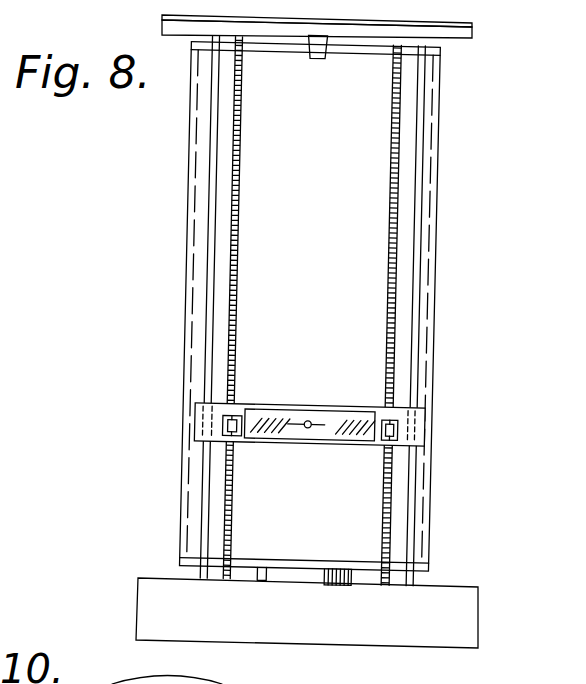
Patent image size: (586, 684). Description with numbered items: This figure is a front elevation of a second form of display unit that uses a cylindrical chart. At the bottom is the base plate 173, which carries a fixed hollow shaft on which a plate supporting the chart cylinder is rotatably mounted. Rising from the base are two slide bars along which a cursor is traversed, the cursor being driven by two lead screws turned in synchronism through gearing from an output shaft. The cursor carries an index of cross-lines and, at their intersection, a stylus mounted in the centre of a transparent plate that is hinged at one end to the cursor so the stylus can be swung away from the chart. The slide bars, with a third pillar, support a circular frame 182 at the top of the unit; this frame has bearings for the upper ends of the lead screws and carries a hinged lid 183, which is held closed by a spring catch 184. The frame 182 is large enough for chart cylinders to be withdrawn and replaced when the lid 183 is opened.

The base plate 173 is at (150, 603).
The circular frame 182 is at (462, 38).
The hinged lid 183 is at (470, 24).
The spring catch 184 is at (320, 58).